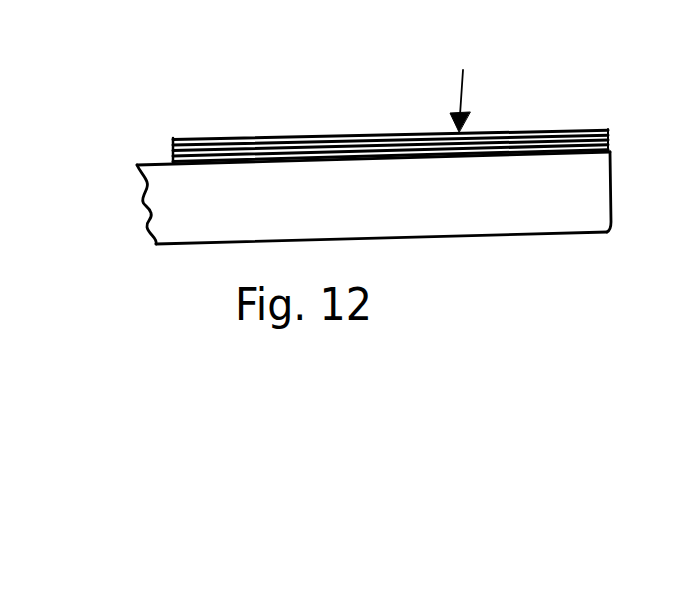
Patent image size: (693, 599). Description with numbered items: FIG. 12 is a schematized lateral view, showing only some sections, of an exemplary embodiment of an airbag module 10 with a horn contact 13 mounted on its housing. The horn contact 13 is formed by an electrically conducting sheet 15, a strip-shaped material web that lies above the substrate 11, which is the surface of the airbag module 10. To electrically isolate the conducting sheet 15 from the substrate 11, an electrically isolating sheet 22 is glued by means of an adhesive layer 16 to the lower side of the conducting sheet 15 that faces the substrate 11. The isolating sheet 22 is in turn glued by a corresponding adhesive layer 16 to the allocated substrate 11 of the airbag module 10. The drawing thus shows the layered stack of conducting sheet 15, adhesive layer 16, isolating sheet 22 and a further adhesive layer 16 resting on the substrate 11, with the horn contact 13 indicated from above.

The airbag module 10 is at (525, 222).
The substrate 11 is at (567, 153).
The horn contact 13 is at (466, 82).
The electrically conducting sheet 15 is at (545, 129).
The adhesive layer 16 is at (608, 134).
The electrically isolating sheet 22 is at (608, 138).